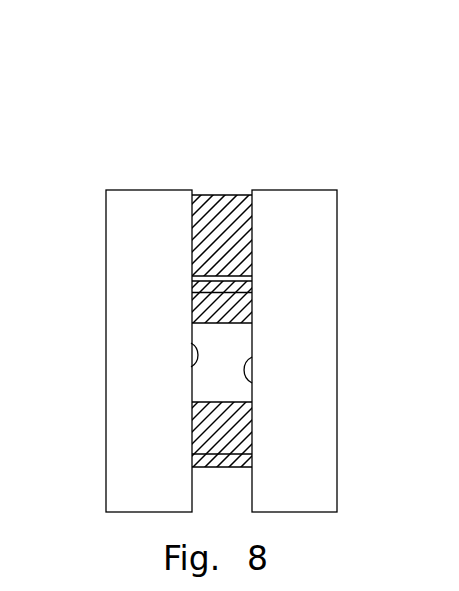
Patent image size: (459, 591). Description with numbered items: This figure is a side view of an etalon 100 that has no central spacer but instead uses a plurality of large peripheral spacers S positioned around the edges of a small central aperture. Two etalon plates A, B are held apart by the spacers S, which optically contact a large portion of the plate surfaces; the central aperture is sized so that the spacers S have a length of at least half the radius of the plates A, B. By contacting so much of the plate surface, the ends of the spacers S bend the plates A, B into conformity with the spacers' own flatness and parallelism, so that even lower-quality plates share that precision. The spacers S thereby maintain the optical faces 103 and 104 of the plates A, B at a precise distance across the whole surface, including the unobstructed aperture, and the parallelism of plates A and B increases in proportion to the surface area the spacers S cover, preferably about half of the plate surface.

The etalon 100 is at (136, 87).
The etalon plate A is at (148, 220).
The etalon plate B is at (286, 218).
The spacers S is at (216, 237).
The optical face 103 is at (192, 374).
The optical face 104 is at (250, 385).